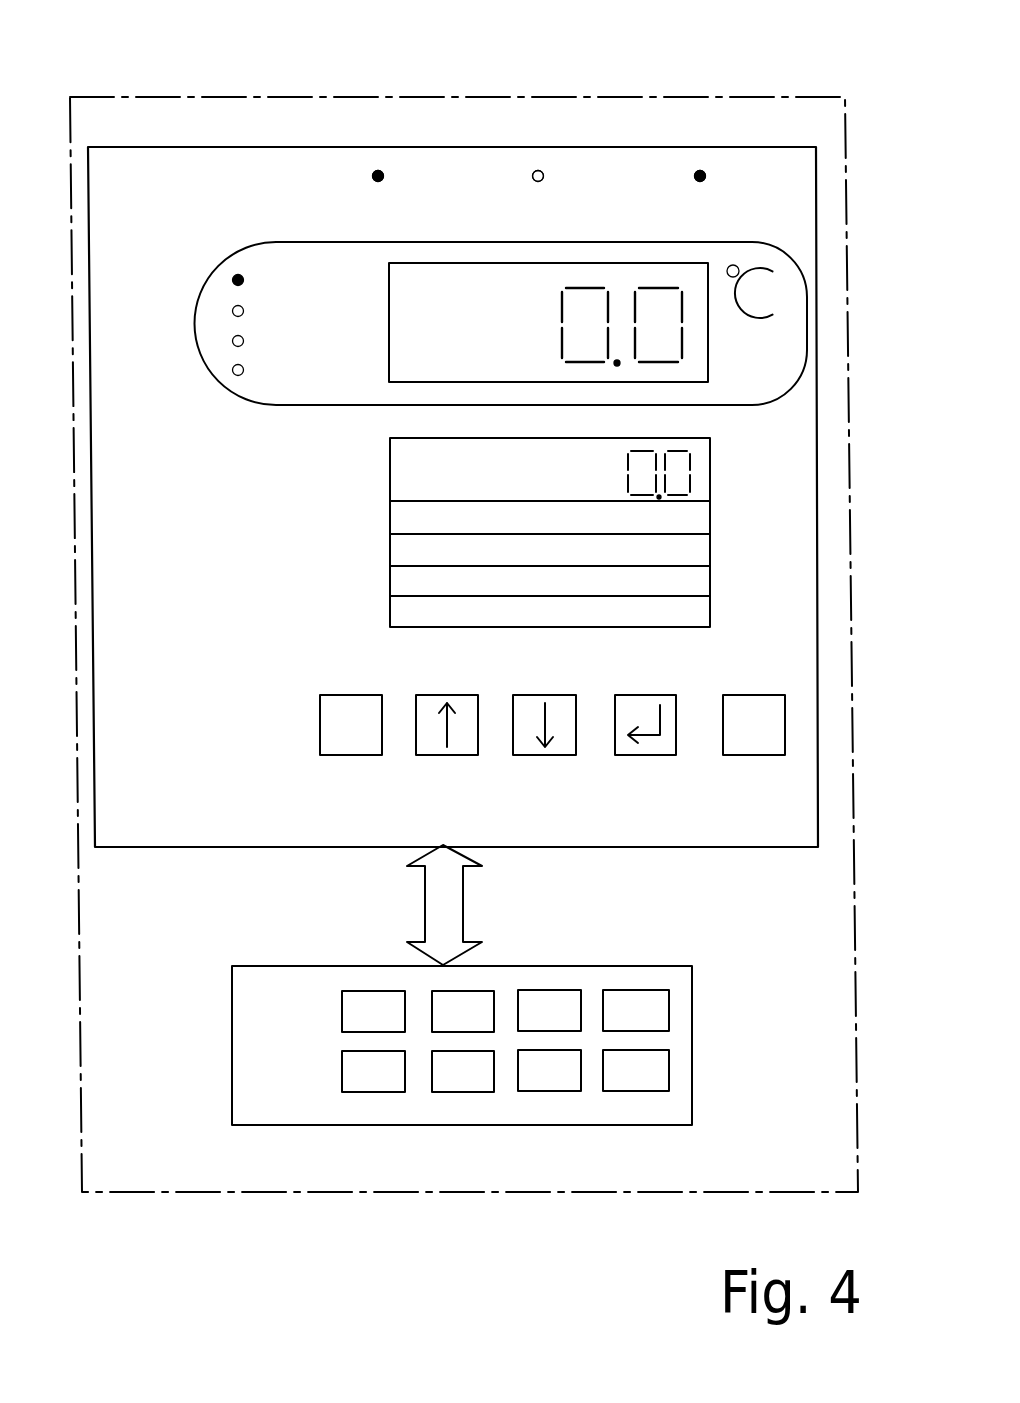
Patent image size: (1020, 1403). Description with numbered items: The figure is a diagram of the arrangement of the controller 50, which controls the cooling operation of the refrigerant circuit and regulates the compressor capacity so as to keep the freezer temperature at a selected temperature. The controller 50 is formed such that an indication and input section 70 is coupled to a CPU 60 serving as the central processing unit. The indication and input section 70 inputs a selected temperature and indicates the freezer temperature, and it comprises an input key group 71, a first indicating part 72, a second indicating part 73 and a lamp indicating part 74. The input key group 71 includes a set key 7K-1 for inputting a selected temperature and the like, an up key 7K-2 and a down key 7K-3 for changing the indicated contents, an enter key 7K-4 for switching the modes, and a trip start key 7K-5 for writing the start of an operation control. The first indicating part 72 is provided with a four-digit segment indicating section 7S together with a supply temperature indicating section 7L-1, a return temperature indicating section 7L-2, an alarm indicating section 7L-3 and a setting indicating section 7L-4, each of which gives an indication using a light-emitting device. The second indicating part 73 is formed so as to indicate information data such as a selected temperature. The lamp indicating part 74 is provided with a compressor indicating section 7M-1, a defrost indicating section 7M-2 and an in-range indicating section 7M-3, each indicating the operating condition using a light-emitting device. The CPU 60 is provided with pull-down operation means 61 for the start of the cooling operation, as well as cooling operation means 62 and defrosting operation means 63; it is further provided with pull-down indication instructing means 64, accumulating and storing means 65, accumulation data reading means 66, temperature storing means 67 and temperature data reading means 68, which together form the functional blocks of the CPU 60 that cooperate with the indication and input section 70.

The controller 50 is at (850, 133).
The indication and input section 70 is at (728, 855).
The lamp indicating part 74 is at (330, 176).
The compressor indicating section 7M-1 is at (378, 171).
The defrost indicating section 7M-2 is at (538, 170).
The in-range indicating section 7M-3 is at (700, 170).
The first indicating part 72 is at (753, 405).
The supply temperature indicating section 7L-1 is at (236, 277).
The return temperature indicating section 7L-2 is at (232, 311).
The alarm indicating section 7L-3 is at (232, 343).
The setting indicating section 7L-4 is at (236, 376).
The 4-digit segment indicating section 7S is at (708, 347).
The second indicating part 73 is at (386, 562).
The input key group 71 is at (474, 733).
The set key 7K-1 is at (343, 757).
The up key 7K-2 is at (447, 757).
The down key 7K-3 is at (545, 757).
The enter key 7K-4 is at (645, 757).
The trip start key 7K-5 is at (755, 757).
The CPU 60 is at (445, 1021).
The pull-down operation means 61 is at (370, 991).
The cooling operation means 62 is at (472, 991).
The defrosting operation means 63 is at (553, 990).
The pull-down indication instructing means 64 is at (643, 990).
The accumulating and storing means 65 is at (373, 1092).
The accumulation data reading means 66 is at (465, 1092).
The temperature storing means 67 is at (553, 1090).
The temperature data reading means 68 is at (650, 1090).